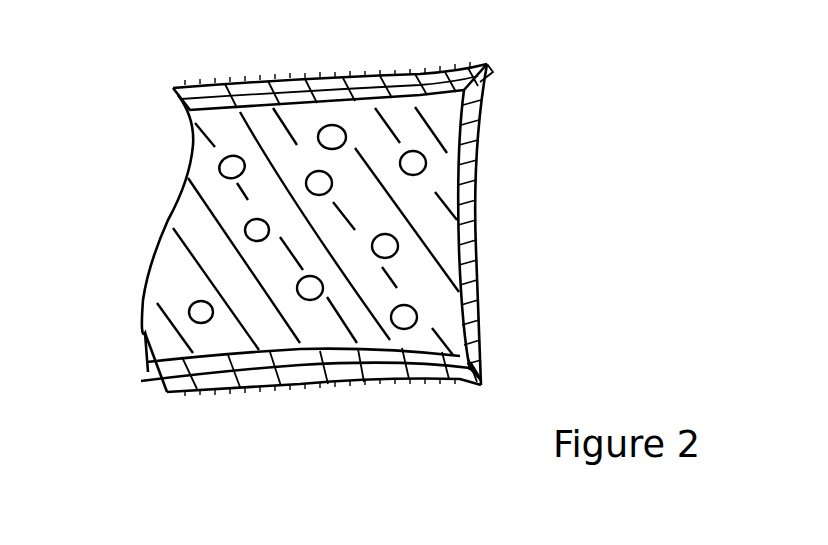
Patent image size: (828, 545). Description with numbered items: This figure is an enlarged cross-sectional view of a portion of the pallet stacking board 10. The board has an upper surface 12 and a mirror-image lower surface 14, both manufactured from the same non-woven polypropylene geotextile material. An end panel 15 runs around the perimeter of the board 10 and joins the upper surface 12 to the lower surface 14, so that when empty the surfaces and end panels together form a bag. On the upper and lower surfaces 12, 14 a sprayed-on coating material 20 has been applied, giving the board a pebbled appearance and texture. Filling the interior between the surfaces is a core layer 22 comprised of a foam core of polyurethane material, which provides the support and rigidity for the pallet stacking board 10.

The pallet stacking board 10 is at (603, 135).
The upper surface 12 is at (250, 100).
The lower surface 14 is at (249, 362).
The end panel 15 is at (479, 250).
The sprayed-on coating material 20 is at (325, 78).
The core layer 22 is at (185, 220).